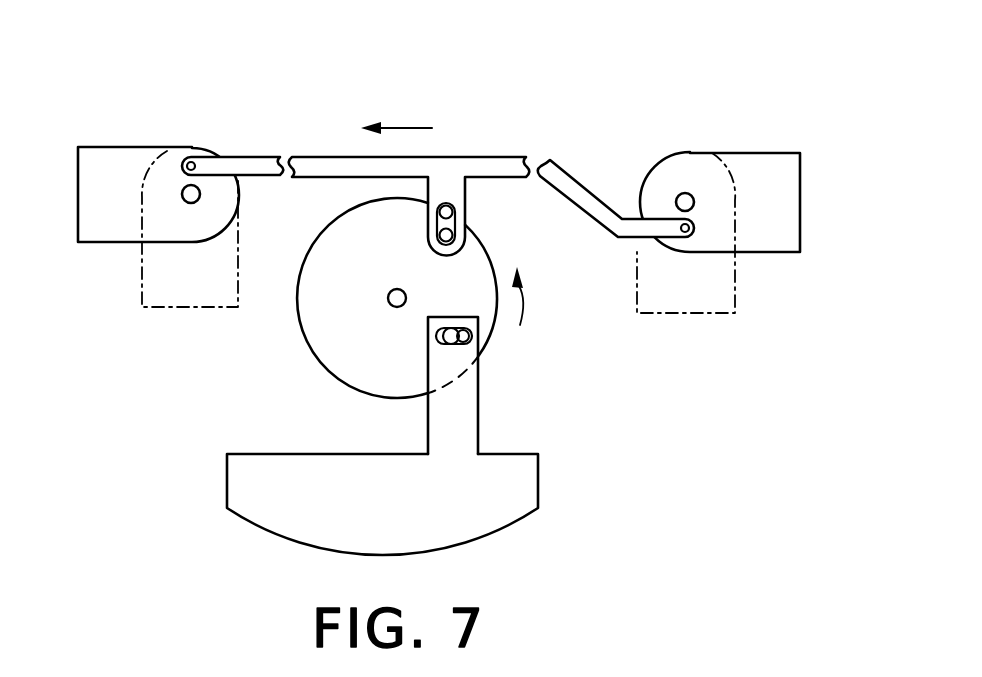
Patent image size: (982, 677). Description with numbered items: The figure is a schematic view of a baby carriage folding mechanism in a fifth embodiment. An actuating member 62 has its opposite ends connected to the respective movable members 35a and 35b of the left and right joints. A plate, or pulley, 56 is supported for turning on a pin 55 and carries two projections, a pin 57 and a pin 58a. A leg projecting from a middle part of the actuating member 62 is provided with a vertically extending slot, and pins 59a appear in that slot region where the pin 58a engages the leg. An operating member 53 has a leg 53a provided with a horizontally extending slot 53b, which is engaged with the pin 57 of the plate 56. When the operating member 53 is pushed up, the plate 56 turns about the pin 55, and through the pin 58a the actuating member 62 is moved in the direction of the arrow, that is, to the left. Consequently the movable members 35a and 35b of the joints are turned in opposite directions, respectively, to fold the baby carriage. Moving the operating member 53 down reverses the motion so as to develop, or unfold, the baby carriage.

The movable member 35a is at (137, 157).
The movable member 35b is at (758, 167).
The actuating member 62 is at (450, 174).
The pins 59a is at (453, 223).
The pin 58a is at (457, 238).
The pin 55 is at (390, 292).
The plate (pulley) 56 is at (318, 342).
The pin 57 is at (450, 338).
The elongated slot 53b is at (472, 336).
The leg 53a is at (466, 414).
The operating member 53 is at (503, 504).